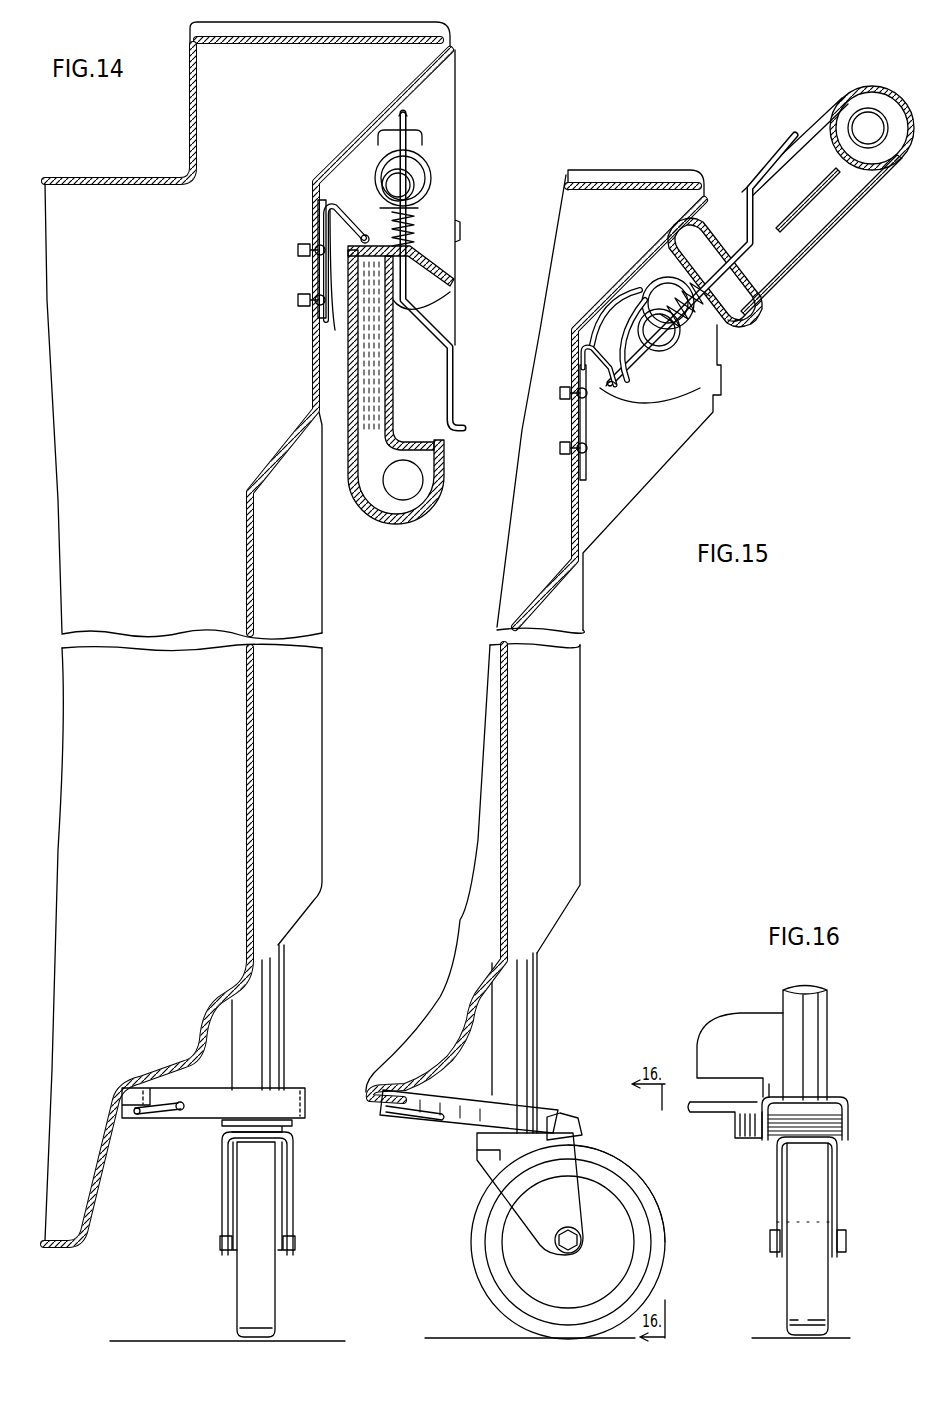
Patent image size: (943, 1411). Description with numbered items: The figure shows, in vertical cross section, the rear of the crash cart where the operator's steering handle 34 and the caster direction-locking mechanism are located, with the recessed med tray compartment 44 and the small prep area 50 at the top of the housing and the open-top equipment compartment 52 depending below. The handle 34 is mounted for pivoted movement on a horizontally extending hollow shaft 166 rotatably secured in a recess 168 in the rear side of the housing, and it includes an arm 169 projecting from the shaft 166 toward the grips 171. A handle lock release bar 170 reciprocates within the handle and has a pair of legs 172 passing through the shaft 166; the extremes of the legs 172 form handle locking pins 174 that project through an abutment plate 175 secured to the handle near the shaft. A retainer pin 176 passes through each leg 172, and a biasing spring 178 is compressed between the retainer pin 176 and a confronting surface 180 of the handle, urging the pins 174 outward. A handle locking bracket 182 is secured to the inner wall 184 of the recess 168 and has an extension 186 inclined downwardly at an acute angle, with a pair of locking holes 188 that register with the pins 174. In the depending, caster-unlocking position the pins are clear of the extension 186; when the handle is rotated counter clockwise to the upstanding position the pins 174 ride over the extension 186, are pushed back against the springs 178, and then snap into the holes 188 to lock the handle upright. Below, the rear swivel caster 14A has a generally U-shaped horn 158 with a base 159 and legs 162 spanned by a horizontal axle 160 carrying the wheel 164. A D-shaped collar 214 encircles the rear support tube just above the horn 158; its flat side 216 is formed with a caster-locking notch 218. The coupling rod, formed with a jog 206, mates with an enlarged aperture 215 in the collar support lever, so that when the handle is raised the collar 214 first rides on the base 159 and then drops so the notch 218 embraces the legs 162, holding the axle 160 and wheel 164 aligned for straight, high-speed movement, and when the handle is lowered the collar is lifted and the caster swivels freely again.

In FIG. 14, the operator's steering handle 34 is at (356, 492).
In FIG. 15, the operator's steering handle 34 is at (768, 330).
In FIG. 14, the recessed med tray compartment 44 is at (118, 178).
In FIG. 14, the small prep area 50 is at (320, 32).
In FIG. 15, the small prep area 50 is at (618, 182).
In FIG. 14, the open-top equipment compartment 52 is at (95, 1195).
In FIG. 14, the horn 158 is at (312, 1158).
In FIG. 15, the horn 158 is at (582, 1204).
In FIG. 16, the horn 158 is at (771, 1214).
In FIG. 14, the base 159 is at (225, 1122).
In FIG. 14, the horizontal axle 160 is at (297, 1243).
In FIG. 16, the horizontal axle 160 is at (770, 1241).
In FIG. 14, the legs 162 is at (222, 1200).
In FIG. 15, the legs 162 is at (522, 1178).
In FIG. 16, the legs 162 is at (776, 1172).
In FIG. 14, the wheel 164 is at (270, 1297).
In FIG. 15, the wheel 164 is at (512, 1285).
In FIG. 16, the wheel 164 is at (797, 1275).
In FIG. 14, the hollow shaft 166 is at (378, 175).
In FIG. 15, the hollow shaft 166 is at (650, 283).
In FIG. 14, the recess 168 is at (430, 178).
In FIG. 15, the recess 168 is at (668, 303).
In FIG. 15, the arm 169 is at (817, 268).
In FIG. 14, the handle lock release bar 170 is at (456, 428).
In FIG. 15, the handle lock release bar 170 is at (793, 128).
In FIG. 14, the grips 171 is at (412, 497).
In FIG. 15, the grips 171 is at (868, 128).
In FIG. 14, the legs 172 is at (442, 272).
In FIG. 15, the legs 172 is at (752, 274).
In FIG. 14, the handle locking pins 174 is at (408, 118).
In FIG. 15, the handle locking pins 174 is at (610, 390).
In FIG. 14, the abutment plate 175 is at (422, 138).
In FIG. 15, the abutment plate 175 is at (611, 345).
In FIG. 14, the retainer pin 176 is at (382, 208).
In FIG. 15, the retainer pin 176 is at (659, 330).
In FIG. 14, the biasing spring 178 is at (416, 226).
In FIG. 15, the biasing spring 178 is at (678, 262).
In FIG. 14, the confronting surface 180 is at (396, 265).
In FIG. 14, the handle locking bracket 182 is at (316, 270).
In FIG. 15, the handle locking bracket 182 is at (588, 427).
In FIG. 14, the inner wall 184 is at (312, 382).
In FIG. 14, the extension 186 is at (322, 212).
In FIG. 15, the extension 186 is at (603, 390).
In FIG. 14, the locking holes 188 is at (358, 239).
In FIG. 14, the jog 206 is at (160, 1120).
In FIG. 15, the jog 206 is at (415, 1113).
In FIG. 14, the D-shaped collar 214 is at (258, 1017).
In FIG. 15, the D-shaped collar 214 is at (533, 1122).
In FIG. 16, the D-shaped collar 214 is at (805, 1043).
In FIG. 14, the enlarged aperture 215 is at (180, 1102).
In FIG. 15, the enlarged aperture 215 is at (445, 1105).
In FIG. 15, the flat side 216 is at (563, 1128).
In FIG. 16, the flat side 216 is at (803, 1123).
In FIG. 16, the caster-locking notch 218 is at (812, 1142).
In FIG. 15, the swivel caster 14A is at (605, 1152).
In FIG. 16, the swivel caster 14A is at (818, 1190).